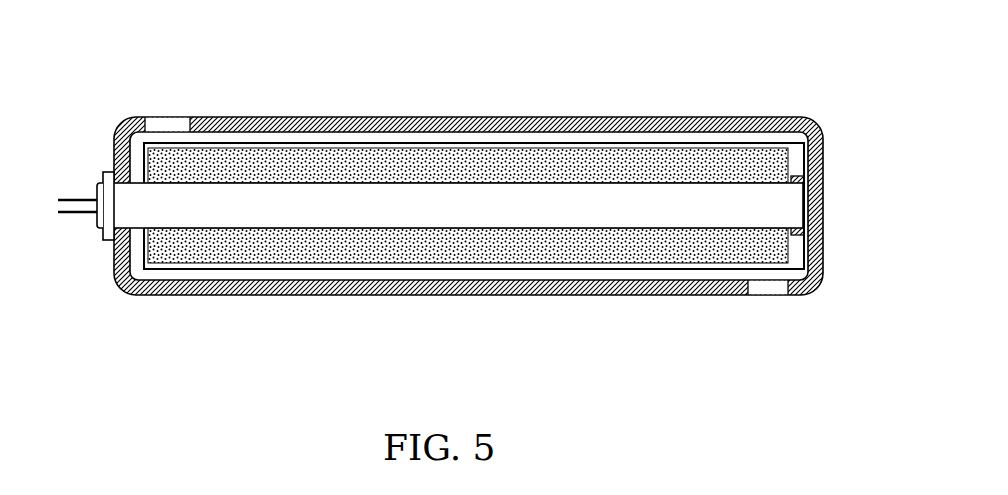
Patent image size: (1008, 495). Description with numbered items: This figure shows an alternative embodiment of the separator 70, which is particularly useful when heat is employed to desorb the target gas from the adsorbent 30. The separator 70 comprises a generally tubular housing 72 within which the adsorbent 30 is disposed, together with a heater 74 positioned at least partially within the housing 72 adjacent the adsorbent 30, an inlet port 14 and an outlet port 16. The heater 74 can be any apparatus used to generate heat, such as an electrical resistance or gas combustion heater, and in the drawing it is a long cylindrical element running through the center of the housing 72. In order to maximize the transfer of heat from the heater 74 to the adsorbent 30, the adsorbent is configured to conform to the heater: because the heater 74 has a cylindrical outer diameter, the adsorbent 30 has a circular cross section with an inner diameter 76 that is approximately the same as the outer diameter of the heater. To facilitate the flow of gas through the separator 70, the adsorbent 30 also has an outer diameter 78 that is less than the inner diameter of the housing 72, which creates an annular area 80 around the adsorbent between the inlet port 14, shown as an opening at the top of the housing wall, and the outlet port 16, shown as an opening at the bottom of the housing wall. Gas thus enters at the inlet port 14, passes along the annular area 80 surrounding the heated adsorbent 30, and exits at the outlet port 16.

The separator 70 is at (440, 184).
The tubular housing 72 is at (412, 116).
The annular area 80 is at (488, 137).
The inlet port 14 is at (172, 122).
The outlet port 16 is at (763, 292).
The adsorbent 30 is at (297, 143).
The outer diameter of the adsorbent 78 is at (690, 143).
The inner diameter of the adsorbent 76 is at (690, 183).
The heater 74 is at (563, 210).